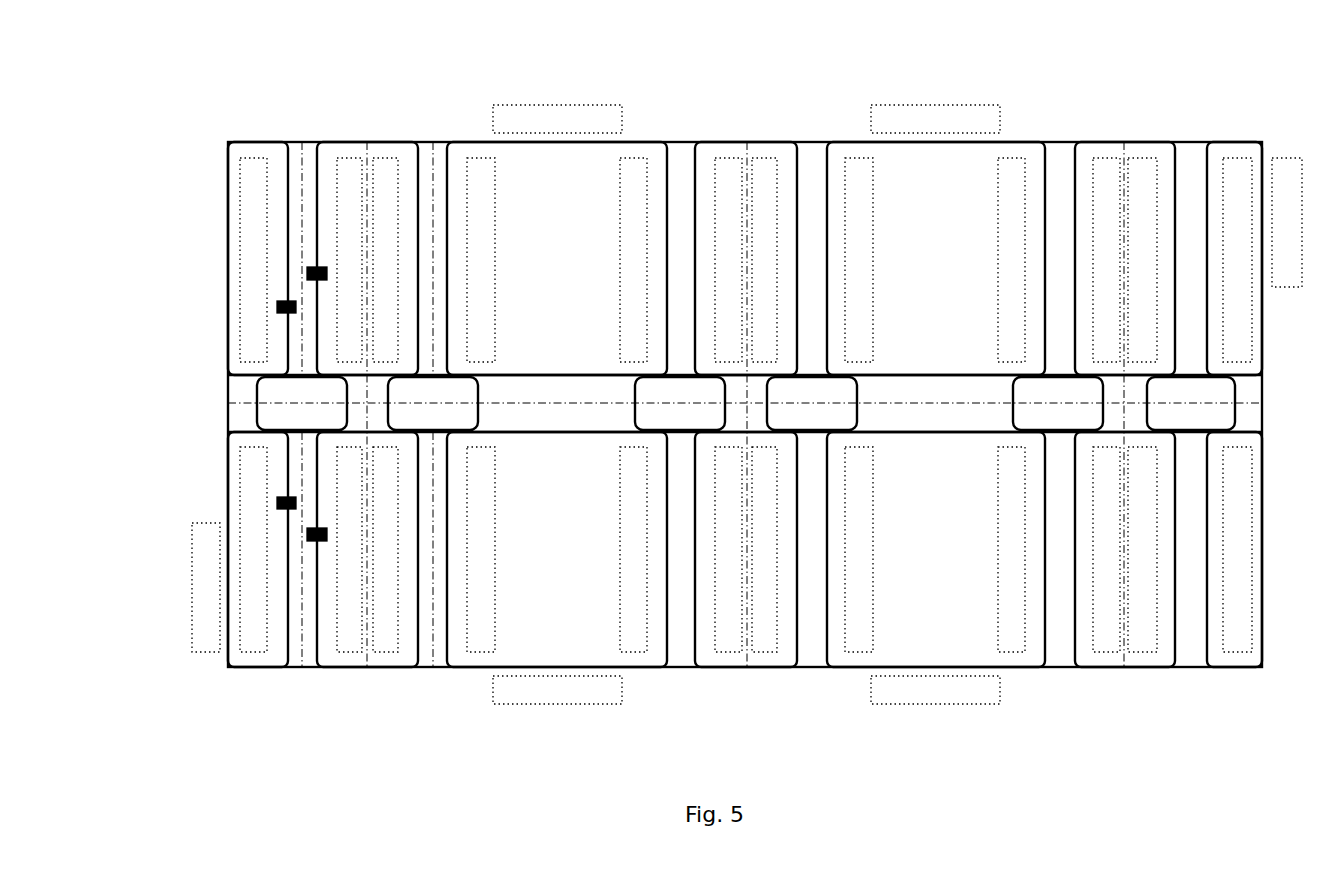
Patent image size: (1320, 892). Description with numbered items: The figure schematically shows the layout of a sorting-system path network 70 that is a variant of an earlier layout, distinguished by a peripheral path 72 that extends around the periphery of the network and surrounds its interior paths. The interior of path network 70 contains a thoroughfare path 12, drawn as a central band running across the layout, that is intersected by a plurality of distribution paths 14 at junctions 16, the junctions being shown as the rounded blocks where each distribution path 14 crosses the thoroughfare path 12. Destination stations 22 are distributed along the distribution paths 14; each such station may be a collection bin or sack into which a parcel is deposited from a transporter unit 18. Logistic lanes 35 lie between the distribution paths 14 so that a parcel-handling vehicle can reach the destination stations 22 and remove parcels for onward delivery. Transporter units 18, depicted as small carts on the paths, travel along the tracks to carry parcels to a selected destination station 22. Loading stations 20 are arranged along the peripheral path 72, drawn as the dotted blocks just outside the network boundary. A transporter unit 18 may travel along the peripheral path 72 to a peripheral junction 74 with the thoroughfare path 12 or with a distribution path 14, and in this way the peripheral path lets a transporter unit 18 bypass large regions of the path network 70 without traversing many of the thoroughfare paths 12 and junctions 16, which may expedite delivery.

The path network 70 is at (200, 96).
The thoroughfare path 12 is at (905, 370).
The destination station 22 is at (467, 180).
The distribution path 14 is at (450, 500).
The peripheral junction 74 is at (826, 142).
The peripheral path 72 is at (1020, 663).
The logistic lane 35 is at (1120, 158).
The junction 16 is at (765, 383).
The transporter unit 18 is at (290, 307).
The loading station 20 is at (955, 105).